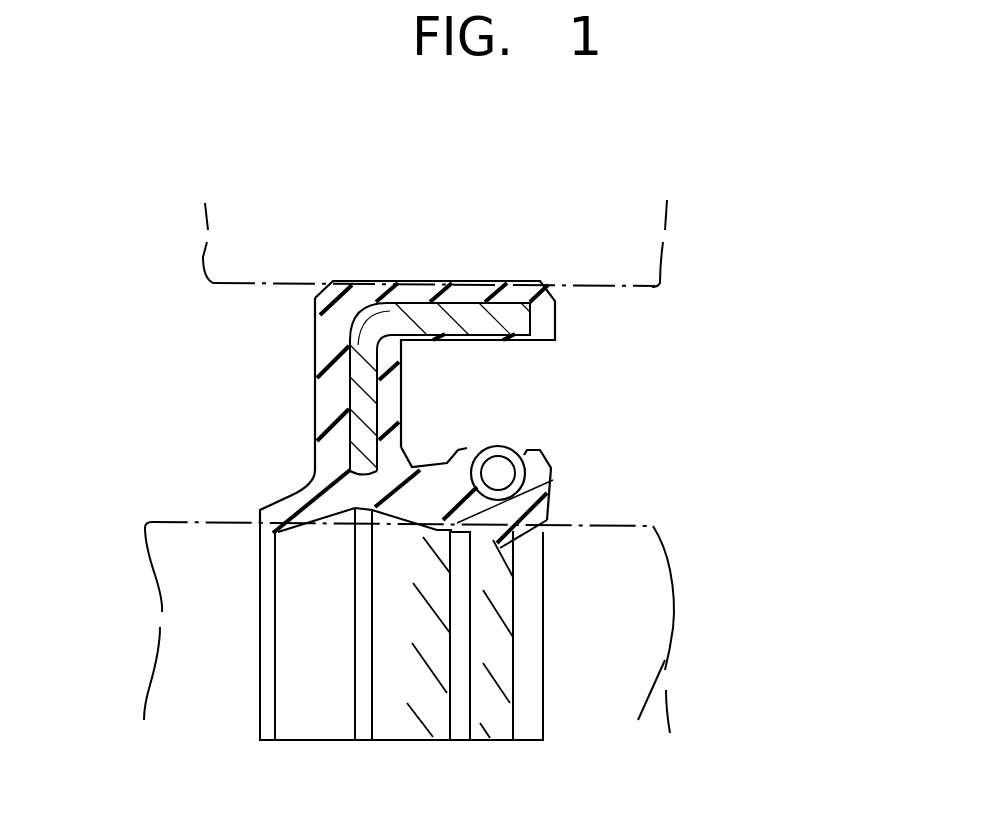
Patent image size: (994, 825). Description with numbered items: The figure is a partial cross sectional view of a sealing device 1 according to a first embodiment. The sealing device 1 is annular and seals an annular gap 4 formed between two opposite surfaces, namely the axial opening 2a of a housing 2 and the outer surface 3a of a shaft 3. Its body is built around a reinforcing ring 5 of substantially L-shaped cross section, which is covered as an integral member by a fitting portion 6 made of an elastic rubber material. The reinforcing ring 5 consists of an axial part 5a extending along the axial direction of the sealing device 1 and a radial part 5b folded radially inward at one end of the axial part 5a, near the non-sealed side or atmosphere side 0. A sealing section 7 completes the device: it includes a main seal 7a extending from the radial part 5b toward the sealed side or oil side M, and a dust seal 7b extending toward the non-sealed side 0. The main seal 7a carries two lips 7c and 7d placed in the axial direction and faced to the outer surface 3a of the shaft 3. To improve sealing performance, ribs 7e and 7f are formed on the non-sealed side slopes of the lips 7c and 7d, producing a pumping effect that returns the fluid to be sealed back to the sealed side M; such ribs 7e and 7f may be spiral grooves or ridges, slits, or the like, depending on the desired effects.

The sealing device 1 is at (605, 208).
The housing 2 is at (645, 272).
The axial opening of the housing 2a is at (625, 290).
The shaft 3 is at (650, 638).
The outer surface of the shaft 3a is at (653, 526).
The non-sealed side (atmosphere side) 0 is at (127, 402).
The annular gap 4 is at (803, 401).
The sealed side (oil side) M is at (793, 475).
The reinforcing ring 5 is at (440, 296).
The axial part 5a is at (459, 320).
The radial part 5b is at (384, 261).
The fitting portion 6 is at (519, 290).
The sealing section 7 is at (410, 470).
The main seal 7a is at (585, 482).
The dust seal 7b is at (283, 503).
The lip 7c is at (557, 525).
The lip 7d is at (553, 480).
The rib 7e is at (490, 677).
The rib 7f is at (425, 669).